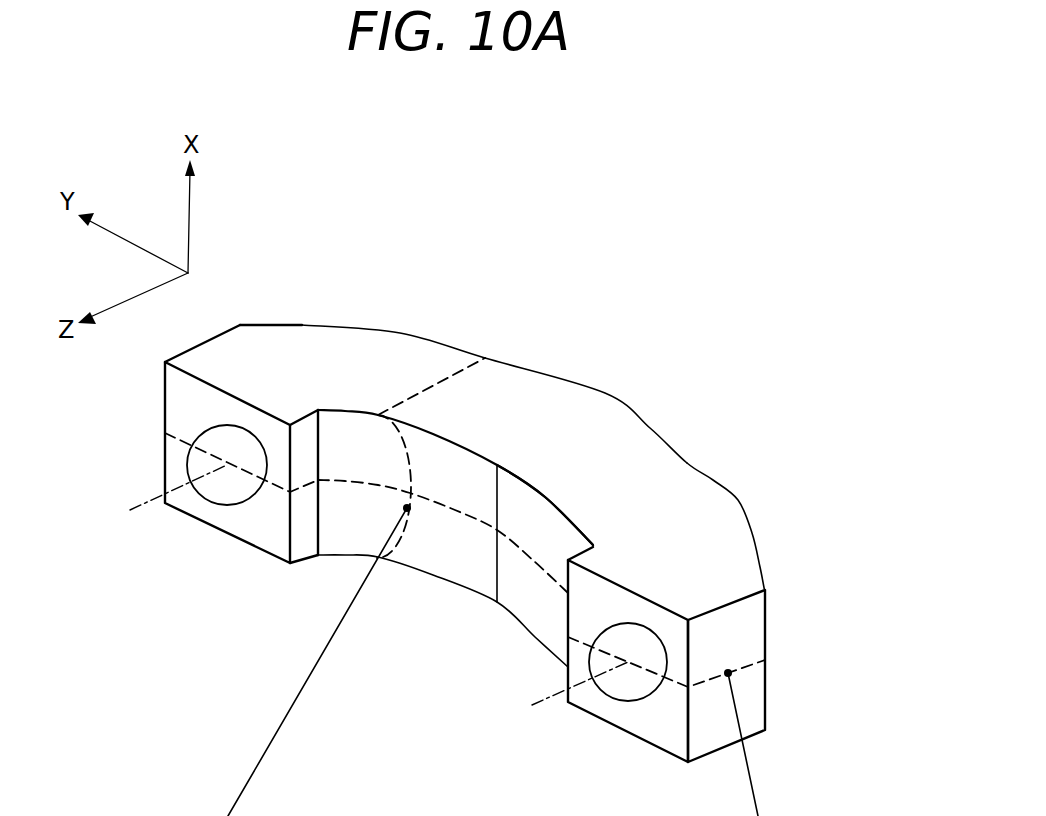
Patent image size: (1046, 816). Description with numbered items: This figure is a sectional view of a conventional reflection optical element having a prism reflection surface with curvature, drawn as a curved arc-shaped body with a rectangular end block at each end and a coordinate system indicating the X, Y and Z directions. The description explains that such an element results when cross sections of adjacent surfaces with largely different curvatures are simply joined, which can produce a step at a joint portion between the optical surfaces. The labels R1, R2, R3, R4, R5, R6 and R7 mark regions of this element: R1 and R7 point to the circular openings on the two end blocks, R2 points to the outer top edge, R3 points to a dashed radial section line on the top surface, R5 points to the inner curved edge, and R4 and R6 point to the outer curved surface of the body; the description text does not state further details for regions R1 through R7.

The region R1 (hole of first end block) R1 is at (198, 436).
The region R2 (outer top edge) R2 is at (343, 328).
The region R3 (radial section line) R3 is at (452, 433).
The region R4 (outer curved surface) R4 is at (605, 393).
The region R5 (inner curved edge) R5 is at (543, 498).
The region R6 (outer curved side) R6 is at (740, 502).
The region R7 (hole of second end block) R7 is at (628, 688).